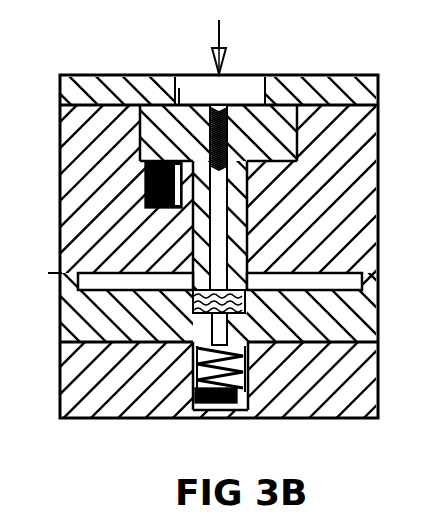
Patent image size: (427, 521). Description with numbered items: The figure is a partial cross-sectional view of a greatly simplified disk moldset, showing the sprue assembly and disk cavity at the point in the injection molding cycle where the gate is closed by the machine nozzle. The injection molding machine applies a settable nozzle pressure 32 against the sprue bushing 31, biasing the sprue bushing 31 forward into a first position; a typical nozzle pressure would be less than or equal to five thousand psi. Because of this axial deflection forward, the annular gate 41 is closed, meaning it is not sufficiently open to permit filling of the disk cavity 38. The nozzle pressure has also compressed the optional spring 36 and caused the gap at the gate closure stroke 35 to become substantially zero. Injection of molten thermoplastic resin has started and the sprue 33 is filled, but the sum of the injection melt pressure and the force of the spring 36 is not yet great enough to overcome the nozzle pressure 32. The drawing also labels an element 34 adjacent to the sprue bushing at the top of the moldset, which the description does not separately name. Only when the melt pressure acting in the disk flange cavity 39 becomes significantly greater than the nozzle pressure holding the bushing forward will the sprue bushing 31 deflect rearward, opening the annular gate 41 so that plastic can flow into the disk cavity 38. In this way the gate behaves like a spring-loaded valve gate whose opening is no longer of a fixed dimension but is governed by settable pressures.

The sprue bushing 31 is at (160, 122).
The nozzle pressure 32 is at (226, 36).
The sprue 33 is at (228, 108).
The top plate 34 is at (278, 100).
The gap at gate closure stroke 35 is at (298, 163).
The spring 36 is at (142, 168).
The disk cavity 38 is at (364, 283).
The disk flange cavity 39 is at (240, 314).
The annular gate 41 is at (207, 294).